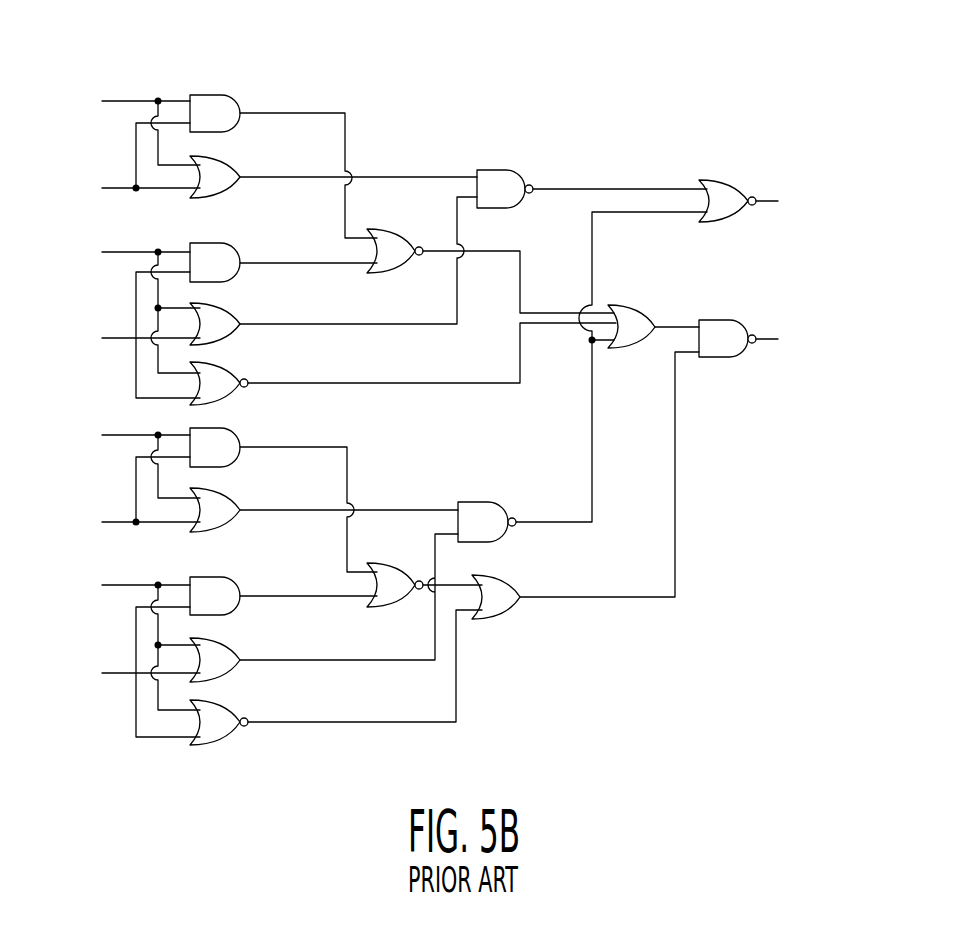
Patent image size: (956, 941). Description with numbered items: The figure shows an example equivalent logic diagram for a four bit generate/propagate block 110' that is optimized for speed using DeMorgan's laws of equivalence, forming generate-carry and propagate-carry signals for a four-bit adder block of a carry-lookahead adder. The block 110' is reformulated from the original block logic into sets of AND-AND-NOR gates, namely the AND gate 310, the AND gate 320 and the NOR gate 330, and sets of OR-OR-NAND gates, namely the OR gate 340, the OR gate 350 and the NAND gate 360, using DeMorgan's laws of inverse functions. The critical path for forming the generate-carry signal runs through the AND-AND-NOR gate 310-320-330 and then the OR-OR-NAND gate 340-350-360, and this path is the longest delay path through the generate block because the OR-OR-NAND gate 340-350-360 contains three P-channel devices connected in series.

The four bit generate/propagate block 110' is at (457, 387).
The AND gate 310 is at (203, 93).
The AND gate 320 is at (198, 242).
The NOR gate 330 is at (385, 228).
The OR gate 340 is at (633, 303).
The OR gate 350 is at (503, 614).
The NAND gate 360 is at (727, 358).